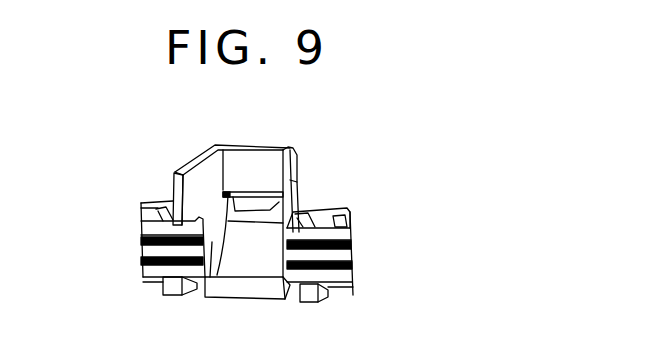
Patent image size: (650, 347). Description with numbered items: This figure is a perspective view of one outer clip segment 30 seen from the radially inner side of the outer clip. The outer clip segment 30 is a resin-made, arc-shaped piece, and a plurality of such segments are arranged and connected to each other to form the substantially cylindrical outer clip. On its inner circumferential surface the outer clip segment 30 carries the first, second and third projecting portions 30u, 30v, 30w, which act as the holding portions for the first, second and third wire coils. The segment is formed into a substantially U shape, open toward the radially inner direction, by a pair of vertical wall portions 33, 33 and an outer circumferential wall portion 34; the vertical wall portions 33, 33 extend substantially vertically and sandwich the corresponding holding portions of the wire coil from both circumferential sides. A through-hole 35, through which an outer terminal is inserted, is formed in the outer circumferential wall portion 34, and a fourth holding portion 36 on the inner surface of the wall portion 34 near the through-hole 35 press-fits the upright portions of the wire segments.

The outer clip segment 30 is at (302, 143).
The vertical wall portion 33 is at (227, 198).
The outer circumferential wall portion 34 is at (247, 160).
The through-hole 35 is at (243, 192).
The fourth holding portion 36 is at (173, 190).
The first projecting portion 30u is at (338, 237).
The second projecting portion 30v is at (338, 257).
The third projecting portion 30w is at (342, 275).